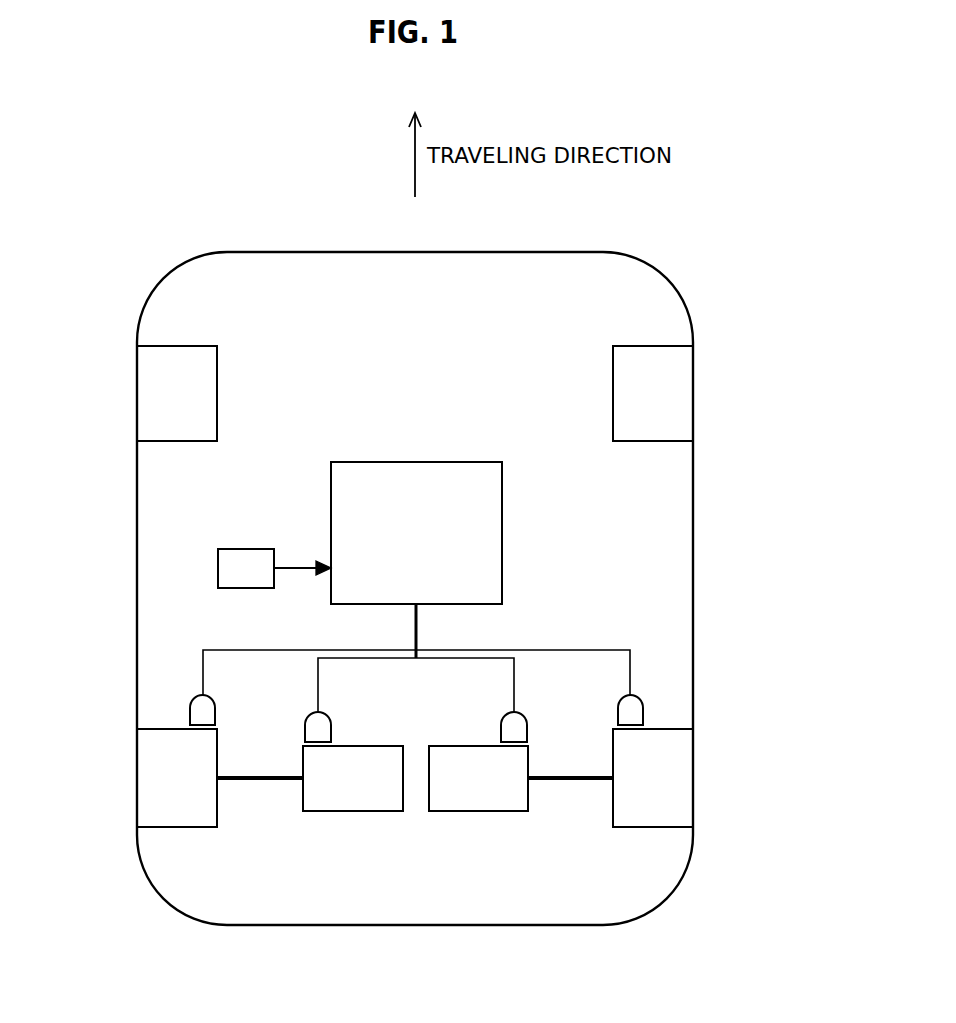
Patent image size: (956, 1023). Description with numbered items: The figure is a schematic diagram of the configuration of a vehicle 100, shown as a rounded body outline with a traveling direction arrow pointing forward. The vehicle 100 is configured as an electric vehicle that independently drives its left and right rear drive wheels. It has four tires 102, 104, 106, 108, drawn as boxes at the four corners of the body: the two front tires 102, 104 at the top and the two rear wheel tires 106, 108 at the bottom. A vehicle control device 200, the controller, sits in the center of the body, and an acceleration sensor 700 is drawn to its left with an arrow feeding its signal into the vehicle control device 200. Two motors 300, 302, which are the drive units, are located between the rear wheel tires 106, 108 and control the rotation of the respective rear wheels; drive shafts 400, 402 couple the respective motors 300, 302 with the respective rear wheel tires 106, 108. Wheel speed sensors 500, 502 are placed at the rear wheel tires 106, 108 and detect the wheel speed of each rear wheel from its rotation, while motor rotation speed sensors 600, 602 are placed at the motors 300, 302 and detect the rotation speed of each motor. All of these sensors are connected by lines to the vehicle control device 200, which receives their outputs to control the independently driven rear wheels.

The vehicle 100 is at (648, 1014).
The tire 102 is at (155, 367).
The tire 104 is at (677, 367).
The rear wheel tire 106 is at (155, 810).
The rear wheel tire 108 is at (677, 812).
The vehicle control device 200 is at (503, 528).
The motor 300 is at (355, 812).
The motor 302 is at (480, 812).
The drive shaft 400 is at (263, 781).
The drive shaft 402 is at (573, 781).
The wheel speed sensor 500 is at (192, 695).
The wheel speed sensor 502 is at (658, 680).
The motor rotation speed sensor 600 is at (307, 712).
The motor rotation speed sensor 602 is at (542, 698).
The acceleration sensor 700 is at (245, 547).